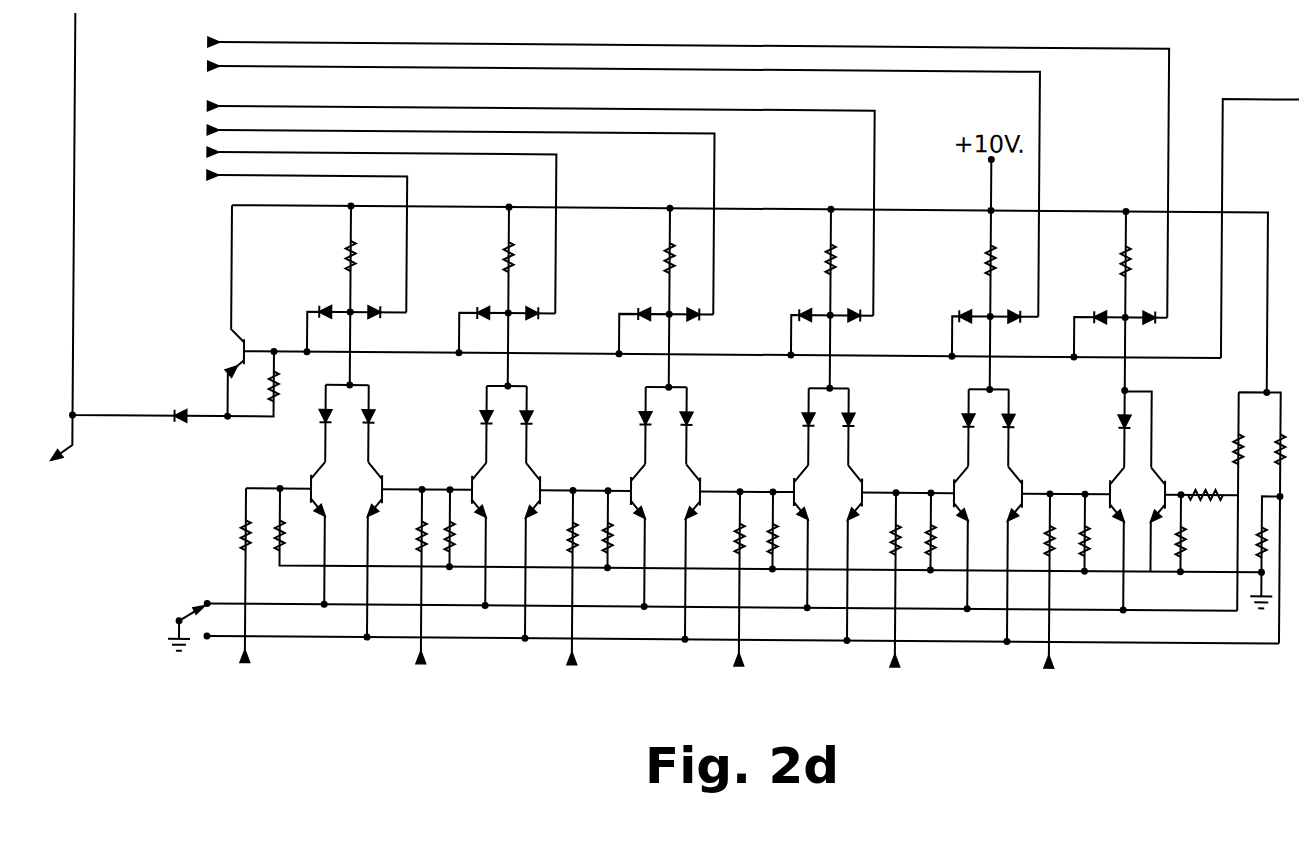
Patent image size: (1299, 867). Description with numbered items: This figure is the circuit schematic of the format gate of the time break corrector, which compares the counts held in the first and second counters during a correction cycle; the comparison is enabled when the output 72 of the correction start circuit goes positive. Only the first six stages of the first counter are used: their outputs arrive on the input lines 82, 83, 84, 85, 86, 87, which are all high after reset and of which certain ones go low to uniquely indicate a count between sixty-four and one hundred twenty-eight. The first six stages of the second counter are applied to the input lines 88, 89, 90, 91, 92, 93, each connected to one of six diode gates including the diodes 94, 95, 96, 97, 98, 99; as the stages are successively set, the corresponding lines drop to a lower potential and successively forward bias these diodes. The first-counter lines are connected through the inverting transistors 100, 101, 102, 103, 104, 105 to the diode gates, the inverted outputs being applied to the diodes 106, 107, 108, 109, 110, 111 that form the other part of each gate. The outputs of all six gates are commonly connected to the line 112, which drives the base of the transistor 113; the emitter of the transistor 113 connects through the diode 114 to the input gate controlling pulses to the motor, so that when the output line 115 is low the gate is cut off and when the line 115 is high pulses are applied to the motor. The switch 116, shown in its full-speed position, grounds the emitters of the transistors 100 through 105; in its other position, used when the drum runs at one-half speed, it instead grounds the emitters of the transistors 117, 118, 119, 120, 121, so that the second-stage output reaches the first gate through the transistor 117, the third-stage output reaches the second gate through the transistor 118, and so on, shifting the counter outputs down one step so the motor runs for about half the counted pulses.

The output of the correction start circuit 72 is at (1258, 93).
The input line 82 is at (248, 664).
The input line 83 is at (424, 664).
The input line 84 is at (575, 664).
The input line 85 is at (742, 664).
The input line 86 is at (898, 664).
The input line 87 is at (1052, 664).
The input line 88 is at (207, 176).
The input line 89 is at (207, 153).
The input line 90 is at (207, 131).
The input line 91 is at (207, 107).
The input line 92 is at (207, 67).
The input line 93 is at (207, 43).
The diode 94 is at (384, 311).
The diode 95 is at (542, 311).
The diode 96 is at (703, 311).
The diode 97 is at (864, 311).
The diode 98 is at (1024, 311).
The diode 99 is at (1159, 311).
The inverting transistor 100 is at (309, 479).
The inverting transistor 101 is at (472, 479).
The inverting transistor 102 is at (631, 479).
The inverting transistor 103 is at (794, 479).
The inverting transistor 104 is at (954, 479).
The inverting transistor 105 is at (1110, 479).
The diode 106 is at (321, 420).
The diode 107 is at (484, 420).
The diode 108 is at (643, 420).
The diode 109 is at (806, 420).
The diode 110 is at (966, 420).
The diode 111 is at (1122, 422).
The line 112 is at (398, 352).
The transistor 113 is at (242, 356).
The diode 114 is at (183, 414).
The output line 115 is at (73, 448).
The switch 116 is at (175, 617).
The inverting transistor 117 is at (388, 489).
The inverting transistor 118 is at (545, 489).
The inverting transistor 119 is at (705, 489).
The inverting transistor 120 is at (867, 489).
The inverting transistor 121 is at (1027, 489).